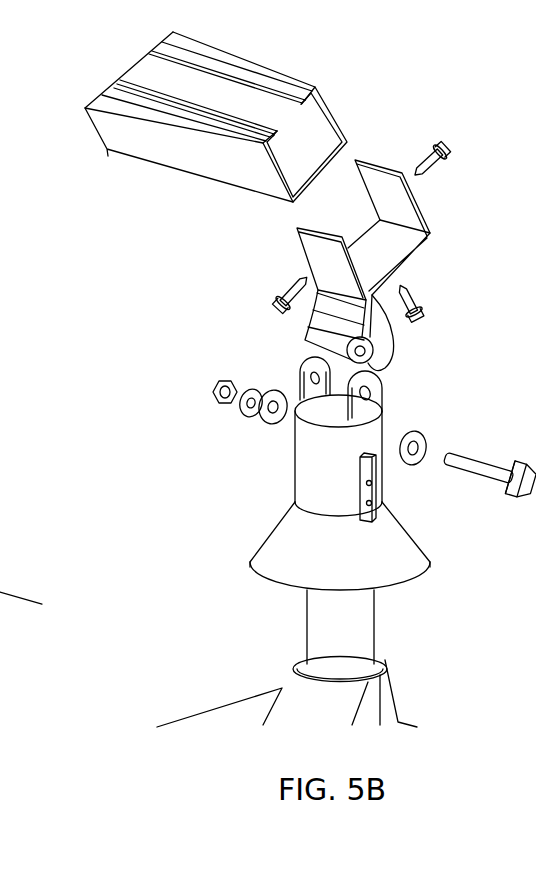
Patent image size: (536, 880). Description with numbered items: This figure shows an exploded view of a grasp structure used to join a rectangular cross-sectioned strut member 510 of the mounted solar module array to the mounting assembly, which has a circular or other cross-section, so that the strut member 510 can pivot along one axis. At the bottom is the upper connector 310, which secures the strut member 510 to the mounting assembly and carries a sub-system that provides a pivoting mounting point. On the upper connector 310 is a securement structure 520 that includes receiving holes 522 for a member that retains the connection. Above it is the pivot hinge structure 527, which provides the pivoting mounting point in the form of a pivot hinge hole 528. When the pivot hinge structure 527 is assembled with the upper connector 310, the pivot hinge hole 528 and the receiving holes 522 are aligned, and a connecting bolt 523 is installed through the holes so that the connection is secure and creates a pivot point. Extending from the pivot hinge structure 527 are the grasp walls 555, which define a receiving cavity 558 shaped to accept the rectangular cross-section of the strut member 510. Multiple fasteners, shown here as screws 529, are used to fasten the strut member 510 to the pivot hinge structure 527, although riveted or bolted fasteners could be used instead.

The strut member 510 is at (317, 118).
The grasp walls 555 is at (402, 208).
The receiving cavity 558 is at (407, 240).
The pivot hinge structure 527 is at (375, 335).
The pivot hinge hole 528 is at (375, 357).
The screws 529 is at (447, 144).
The securement structure 520 is at (270, 358).
The receiving holes 522 is at (291, 415).
The upper connector 310 is at (305, 482).
The connecting bolt 523 is at (484, 471).